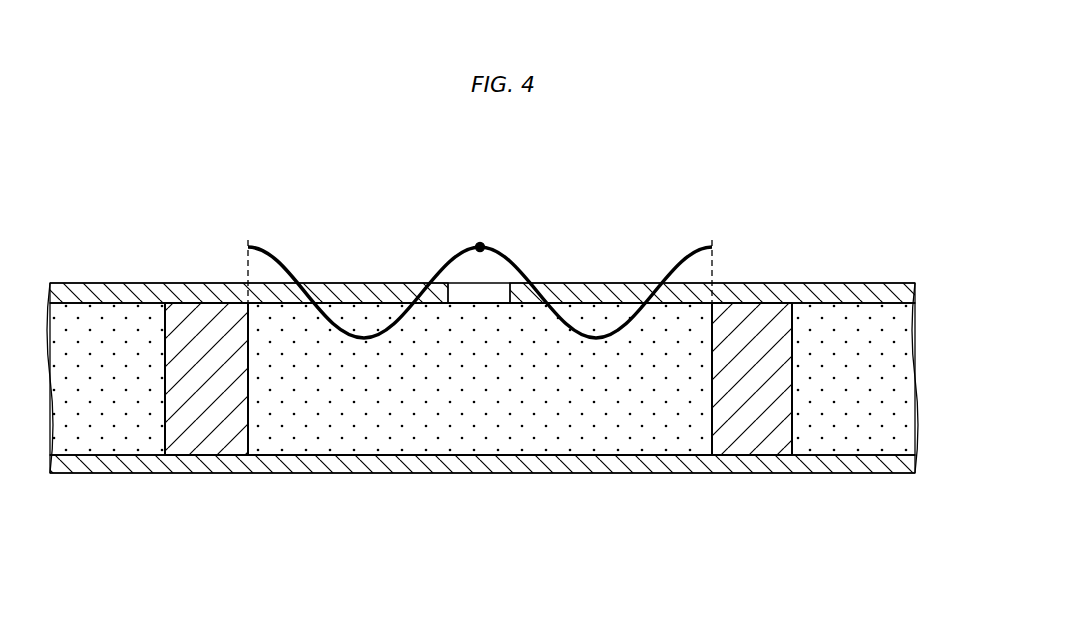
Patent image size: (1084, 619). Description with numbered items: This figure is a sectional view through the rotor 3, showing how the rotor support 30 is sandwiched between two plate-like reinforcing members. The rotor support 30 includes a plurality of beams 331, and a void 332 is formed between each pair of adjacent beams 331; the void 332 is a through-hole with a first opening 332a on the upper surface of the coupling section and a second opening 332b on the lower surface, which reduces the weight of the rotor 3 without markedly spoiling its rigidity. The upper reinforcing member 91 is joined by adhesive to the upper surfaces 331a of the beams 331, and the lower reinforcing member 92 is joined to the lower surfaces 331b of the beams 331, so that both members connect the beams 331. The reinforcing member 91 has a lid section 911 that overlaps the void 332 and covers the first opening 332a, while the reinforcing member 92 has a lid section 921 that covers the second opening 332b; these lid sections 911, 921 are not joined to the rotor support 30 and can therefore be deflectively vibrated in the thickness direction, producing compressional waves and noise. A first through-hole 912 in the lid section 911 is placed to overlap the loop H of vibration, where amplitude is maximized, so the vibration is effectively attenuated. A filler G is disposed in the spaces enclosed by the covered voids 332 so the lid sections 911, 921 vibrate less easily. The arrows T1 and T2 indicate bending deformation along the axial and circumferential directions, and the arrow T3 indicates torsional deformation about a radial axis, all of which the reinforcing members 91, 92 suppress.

The rotor 3 is at (855, 200).
The rotor support 30 is at (797, 328).
The reinforcing member 91 is at (482, 245).
The lid section 911 is at (578, 297).
The first through-hole 912 is at (470, 296).
The reinforcing member 92 is at (482, 520).
The lid section 921 is at (370, 465).
The beam 331 is at (514, 396).
The upper surface of beam 331a is at (197, 302).
The lower surface of beam 331b is at (205, 457).
The void 332 is at (480, 381).
The first opening 332a is at (608, 300).
The second opening 332b is at (660, 465).
The filler G is at (80, 420).
The loop of vibration H is at (480, 247).
The arrow indicating bending deformation along axial direction T1 is at (128, 338).
The arrow indicating bending deformation along circumferential direction T2 is at (268, 379).
The arrow indicating torsional deformation T3 is at (275, 216).